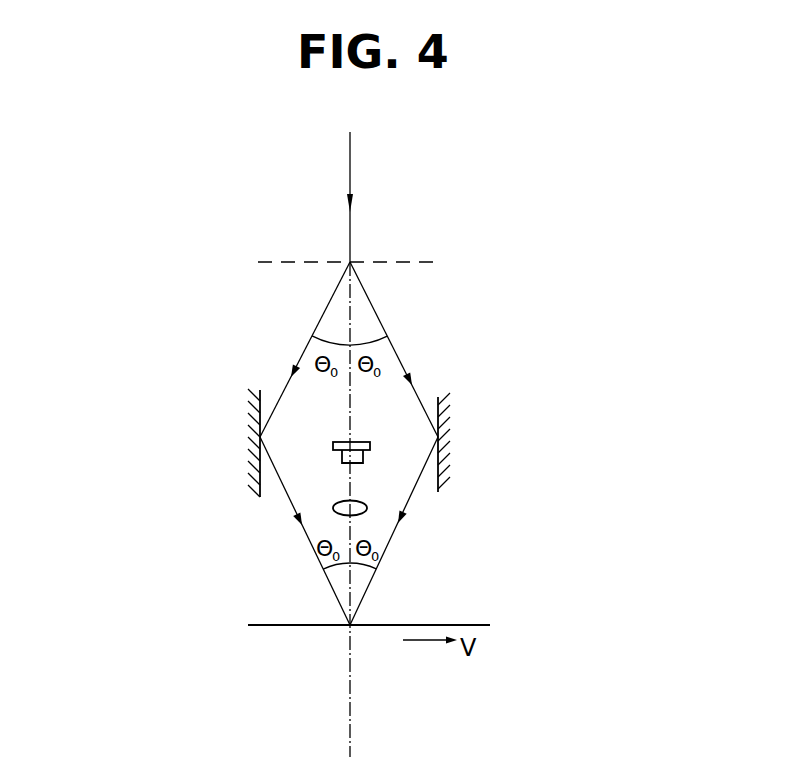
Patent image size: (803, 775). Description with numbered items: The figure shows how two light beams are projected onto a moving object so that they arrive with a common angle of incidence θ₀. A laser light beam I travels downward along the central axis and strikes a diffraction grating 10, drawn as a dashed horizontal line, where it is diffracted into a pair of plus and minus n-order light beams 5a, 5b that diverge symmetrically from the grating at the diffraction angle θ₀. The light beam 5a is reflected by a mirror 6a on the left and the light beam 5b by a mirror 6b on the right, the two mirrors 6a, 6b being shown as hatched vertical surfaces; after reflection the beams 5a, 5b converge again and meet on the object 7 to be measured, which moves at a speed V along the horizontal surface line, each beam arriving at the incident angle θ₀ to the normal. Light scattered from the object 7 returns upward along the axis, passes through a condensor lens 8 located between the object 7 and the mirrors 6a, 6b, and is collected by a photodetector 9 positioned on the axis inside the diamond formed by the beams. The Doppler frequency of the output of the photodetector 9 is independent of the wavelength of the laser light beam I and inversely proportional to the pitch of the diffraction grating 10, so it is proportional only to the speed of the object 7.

The laser light beam I is at (350, 150).
The diffraction grating 10 is at (372, 262).
The light beam 5a is at (322, 314).
The light beam 5b is at (375, 318).
The mirror 6a is at (240, 413).
The mirror 6b is at (455, 413).
The photodetector 9 is at (343, 443).
The condensor lens 8 is at (333, 505).
The object to be measured 7 is at (258, 625).